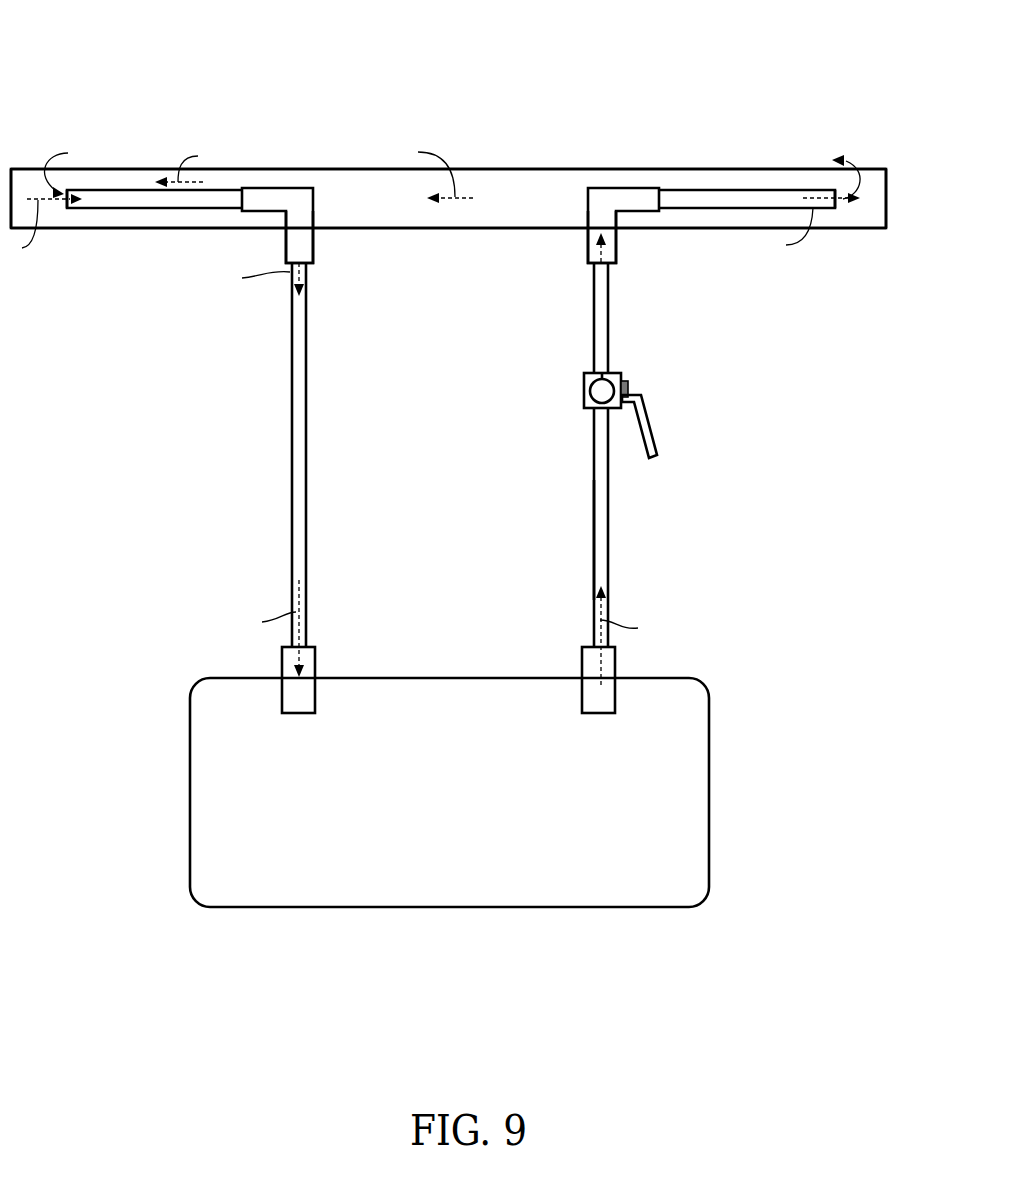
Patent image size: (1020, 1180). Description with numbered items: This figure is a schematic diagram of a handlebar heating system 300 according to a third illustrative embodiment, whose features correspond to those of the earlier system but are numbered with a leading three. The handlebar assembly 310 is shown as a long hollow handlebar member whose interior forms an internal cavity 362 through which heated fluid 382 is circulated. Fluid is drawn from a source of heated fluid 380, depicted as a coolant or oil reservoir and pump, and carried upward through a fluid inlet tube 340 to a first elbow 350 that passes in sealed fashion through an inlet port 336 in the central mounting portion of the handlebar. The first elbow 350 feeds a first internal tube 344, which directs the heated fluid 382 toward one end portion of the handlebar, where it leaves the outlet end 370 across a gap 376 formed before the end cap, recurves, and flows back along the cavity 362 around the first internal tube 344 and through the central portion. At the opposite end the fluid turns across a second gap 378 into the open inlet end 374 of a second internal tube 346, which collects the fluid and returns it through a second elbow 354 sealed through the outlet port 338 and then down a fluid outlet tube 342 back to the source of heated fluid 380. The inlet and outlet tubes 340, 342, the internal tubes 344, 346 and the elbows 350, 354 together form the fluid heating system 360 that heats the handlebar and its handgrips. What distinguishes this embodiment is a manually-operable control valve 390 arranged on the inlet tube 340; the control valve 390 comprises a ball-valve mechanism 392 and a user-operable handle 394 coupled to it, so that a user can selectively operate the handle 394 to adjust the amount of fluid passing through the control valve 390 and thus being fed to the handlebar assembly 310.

The handlebar heating system 300 is at (192, 44).
The handlebar assembly 310 is at (130, 158).
The inlet port 336 is at (617, 232).
The outlet port 338 is at (314, 234).
The fluid inlet tube 340 is at (609, 492).
The fluid outlet tube 342 is at (292, 455).
The first internal tube 344 is at (713, 198).
The second internal tube 346 is at (163, 200).
The first elbow 350 is at (617, 244).
The second elbow 354 is at (314, 245).
The fluid heating system 360 is at (678, 323).
The internal cavity 362 is at (497, 182).
The outlet end 370 is at (838, 208).
The inlet end 374 is at (65, 207).
The gap 376 is at (872, 198).
The gap 378 is at (25, 192).
The source of heated fluid 380 is at (709, 785).
The heated fluid 382 is at (530, 205).
The control valve 390 is at (648, 388).
The ball-valve mechanism 392 is at (583, 388).
The handle 394 is at (651, 425).